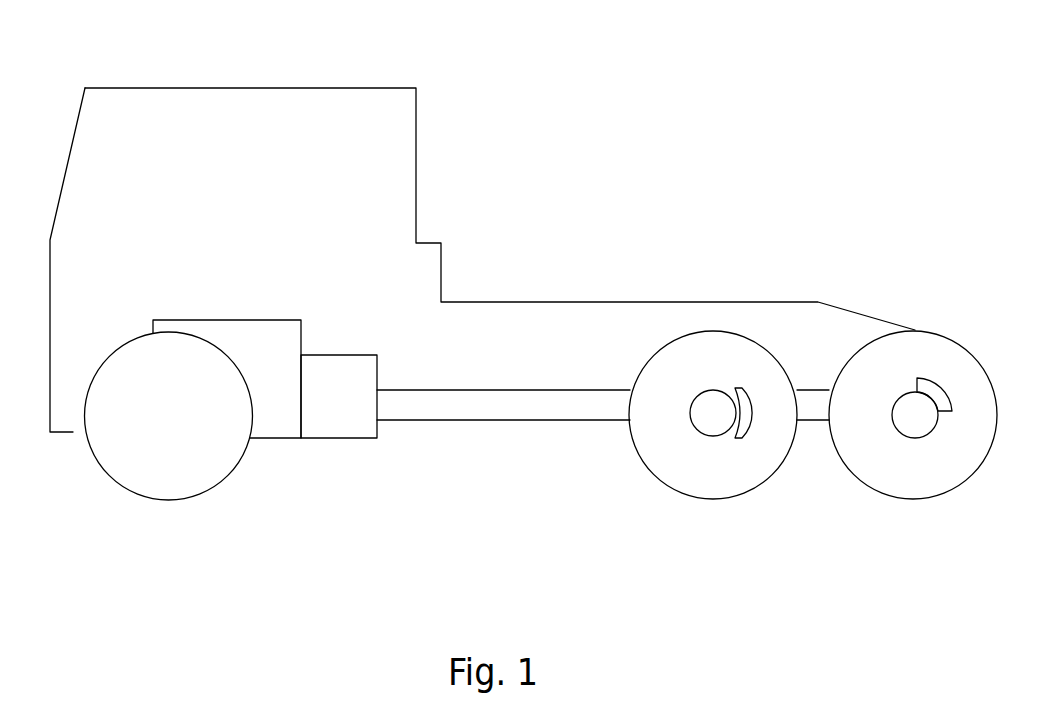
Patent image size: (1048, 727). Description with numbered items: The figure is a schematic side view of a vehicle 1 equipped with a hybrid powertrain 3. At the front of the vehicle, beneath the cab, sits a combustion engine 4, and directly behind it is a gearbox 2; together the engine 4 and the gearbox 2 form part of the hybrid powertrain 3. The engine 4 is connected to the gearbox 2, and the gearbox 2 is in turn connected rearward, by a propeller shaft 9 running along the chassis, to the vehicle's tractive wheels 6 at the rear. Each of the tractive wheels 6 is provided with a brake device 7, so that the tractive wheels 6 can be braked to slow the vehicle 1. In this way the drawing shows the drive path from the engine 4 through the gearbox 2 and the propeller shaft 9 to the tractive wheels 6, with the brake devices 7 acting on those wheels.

The vehicle 1 is at (522, 72).
The gearbox 2 is at (360, 438).
The hybrid powertrain 3 is at (316, 473).
The combustion engine 4 is at (197, 318).
The tractive wheels 6 is at (760, 482).
The brake devices 7 is at (740, 390).
The propeller shaft 9 is at (480, 420).